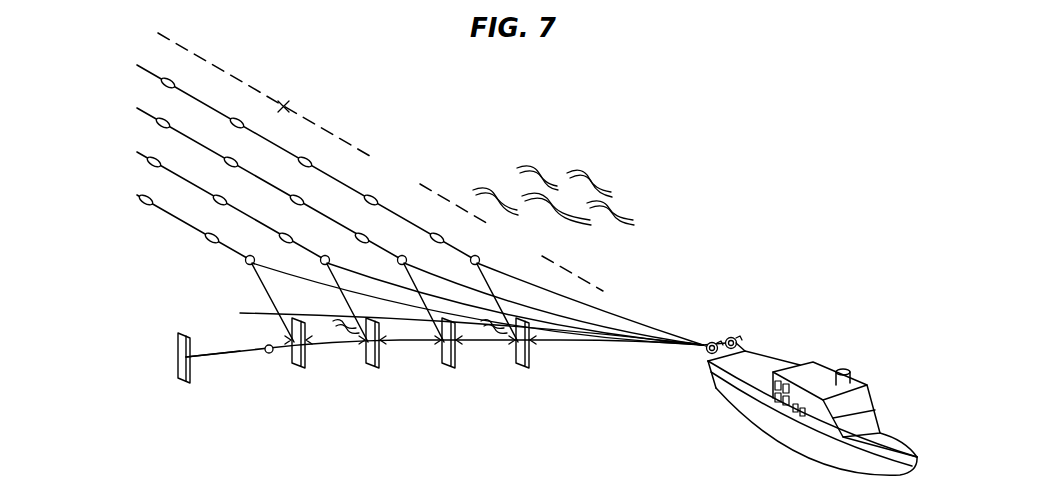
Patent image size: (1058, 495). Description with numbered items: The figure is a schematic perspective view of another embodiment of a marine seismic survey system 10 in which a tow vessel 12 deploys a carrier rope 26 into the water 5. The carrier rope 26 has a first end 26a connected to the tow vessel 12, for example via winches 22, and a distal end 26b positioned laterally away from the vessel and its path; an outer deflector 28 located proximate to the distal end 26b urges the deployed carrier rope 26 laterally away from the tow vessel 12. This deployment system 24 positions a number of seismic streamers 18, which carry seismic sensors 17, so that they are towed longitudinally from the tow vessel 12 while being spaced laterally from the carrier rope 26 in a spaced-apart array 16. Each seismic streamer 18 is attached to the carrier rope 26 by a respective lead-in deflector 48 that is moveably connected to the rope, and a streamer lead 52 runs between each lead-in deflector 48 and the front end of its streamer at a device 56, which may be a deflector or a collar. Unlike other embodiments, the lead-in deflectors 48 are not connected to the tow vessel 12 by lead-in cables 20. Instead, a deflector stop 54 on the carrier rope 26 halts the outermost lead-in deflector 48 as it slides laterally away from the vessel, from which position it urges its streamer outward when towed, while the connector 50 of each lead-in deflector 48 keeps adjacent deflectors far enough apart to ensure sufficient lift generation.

The water 5 is at (581, 203).
The marine seismic survey system 10 is at (700, 190).
The tow vessel 12 is at (868, 402).
The array 16 is at (225, 104).
The seismic sensors 17 is at (300, 198).
The seismic streamers 18 is at (187, 184).
The lead-in cable 20 is at (598, 310).
The winches 22 is at (738, 333).
The deployment system 24 is at (510, 391).
The carrier rope 26 is at (610, 347).
The first end 26a is at (690, 355).
The distal end 26b is at (196, 360).
The outer deflector 28 is at (179, 372).
The lead-in deflector 48 is at (441, 357).
The connector 50 is at (363, 345).
The streamer lead 52 is at (330, 314).
The deflector stop 54 is at (269, 354).
The device 56 is at (408, 259).